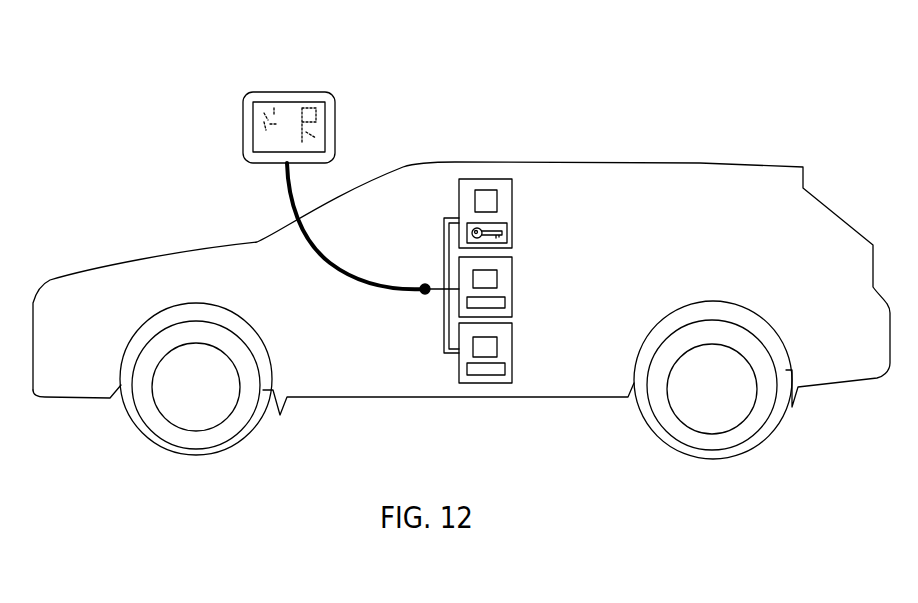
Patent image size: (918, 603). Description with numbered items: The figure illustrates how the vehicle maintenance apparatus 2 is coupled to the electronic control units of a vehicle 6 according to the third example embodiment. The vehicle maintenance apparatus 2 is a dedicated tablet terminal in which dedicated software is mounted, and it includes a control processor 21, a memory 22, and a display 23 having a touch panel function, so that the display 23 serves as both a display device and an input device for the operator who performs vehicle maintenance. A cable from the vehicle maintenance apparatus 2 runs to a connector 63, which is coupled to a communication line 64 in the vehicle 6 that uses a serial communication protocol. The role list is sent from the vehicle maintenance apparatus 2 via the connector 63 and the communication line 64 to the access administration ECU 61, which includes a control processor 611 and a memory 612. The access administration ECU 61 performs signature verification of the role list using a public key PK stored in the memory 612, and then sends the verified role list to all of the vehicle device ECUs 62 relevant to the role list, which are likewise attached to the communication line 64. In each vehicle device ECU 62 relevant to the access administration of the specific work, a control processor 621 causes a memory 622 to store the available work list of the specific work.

The vehicle maintenance apparatus 2 is at (308, 130).
The control processor 21 is at (270, 110).
The memory 22 is at (312, 120).
The display 23 is at (285, 142).
The vehicle 6 is at (657, 142).
The access administration ECU 61 is at (520, 183).
The control processor 611 is at (492, 200).
The memory 612 is at (540, 238).
The private key PK is at (512, 237).
The vehicle device ECU 62 is at (490, 326).
The control processor 621 is at (485, 346).
The memory 622 is at (487, 372).
The connector 63 is at (420, 283).
The communication line 64 is at (442, 312).